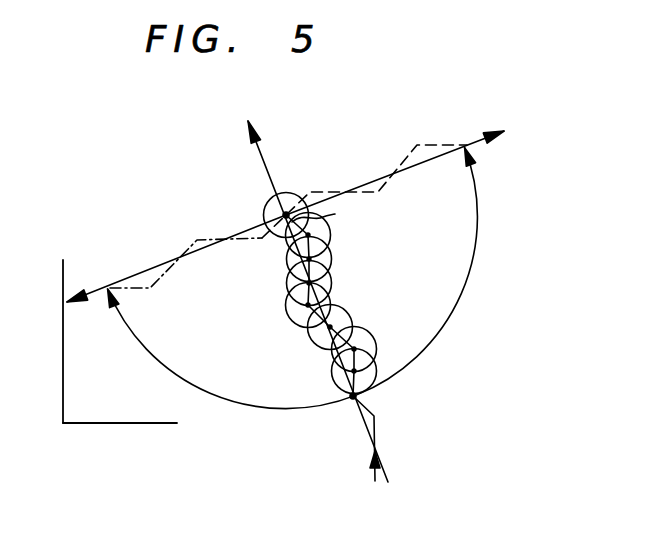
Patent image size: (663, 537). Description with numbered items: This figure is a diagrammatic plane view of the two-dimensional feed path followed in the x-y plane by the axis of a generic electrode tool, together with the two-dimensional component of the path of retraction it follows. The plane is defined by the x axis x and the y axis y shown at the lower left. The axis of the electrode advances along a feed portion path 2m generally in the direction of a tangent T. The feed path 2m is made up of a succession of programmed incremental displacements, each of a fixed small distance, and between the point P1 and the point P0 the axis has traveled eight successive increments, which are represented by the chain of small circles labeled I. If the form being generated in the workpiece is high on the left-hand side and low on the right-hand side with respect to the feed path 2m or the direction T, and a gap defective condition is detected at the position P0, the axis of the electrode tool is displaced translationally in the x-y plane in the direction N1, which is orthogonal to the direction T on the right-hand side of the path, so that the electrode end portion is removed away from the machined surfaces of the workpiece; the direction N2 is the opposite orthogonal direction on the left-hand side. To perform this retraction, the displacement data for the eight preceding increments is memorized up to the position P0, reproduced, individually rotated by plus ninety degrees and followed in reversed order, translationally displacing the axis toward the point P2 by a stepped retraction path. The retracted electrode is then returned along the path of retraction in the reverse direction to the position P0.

The tangent T is at (262, 156).
The circular interpolation tool path circles I is at (286, 196).
The direction N1 is at (467, 143).
The normal direction arrow N2 is at (96, 291).
The point P0 is at (283, 215).
The point P1 is at (351, 400).
The point P2 on arc P2 is at (467, 150).
The feed portion path 2m is at (378, 409).
The x axis x is at (128, 426).
The y axis y is at (63, 330).